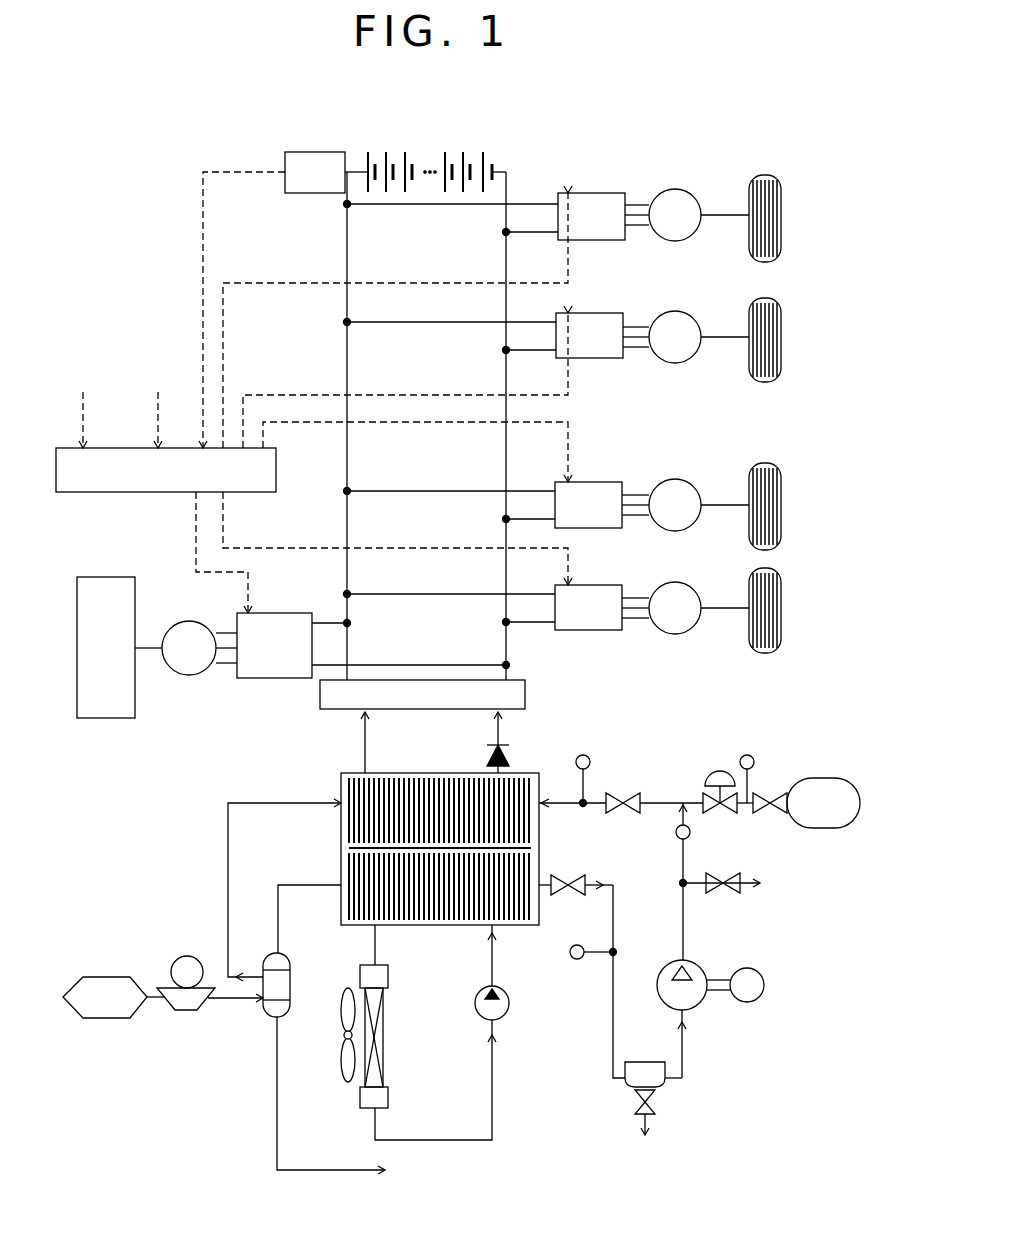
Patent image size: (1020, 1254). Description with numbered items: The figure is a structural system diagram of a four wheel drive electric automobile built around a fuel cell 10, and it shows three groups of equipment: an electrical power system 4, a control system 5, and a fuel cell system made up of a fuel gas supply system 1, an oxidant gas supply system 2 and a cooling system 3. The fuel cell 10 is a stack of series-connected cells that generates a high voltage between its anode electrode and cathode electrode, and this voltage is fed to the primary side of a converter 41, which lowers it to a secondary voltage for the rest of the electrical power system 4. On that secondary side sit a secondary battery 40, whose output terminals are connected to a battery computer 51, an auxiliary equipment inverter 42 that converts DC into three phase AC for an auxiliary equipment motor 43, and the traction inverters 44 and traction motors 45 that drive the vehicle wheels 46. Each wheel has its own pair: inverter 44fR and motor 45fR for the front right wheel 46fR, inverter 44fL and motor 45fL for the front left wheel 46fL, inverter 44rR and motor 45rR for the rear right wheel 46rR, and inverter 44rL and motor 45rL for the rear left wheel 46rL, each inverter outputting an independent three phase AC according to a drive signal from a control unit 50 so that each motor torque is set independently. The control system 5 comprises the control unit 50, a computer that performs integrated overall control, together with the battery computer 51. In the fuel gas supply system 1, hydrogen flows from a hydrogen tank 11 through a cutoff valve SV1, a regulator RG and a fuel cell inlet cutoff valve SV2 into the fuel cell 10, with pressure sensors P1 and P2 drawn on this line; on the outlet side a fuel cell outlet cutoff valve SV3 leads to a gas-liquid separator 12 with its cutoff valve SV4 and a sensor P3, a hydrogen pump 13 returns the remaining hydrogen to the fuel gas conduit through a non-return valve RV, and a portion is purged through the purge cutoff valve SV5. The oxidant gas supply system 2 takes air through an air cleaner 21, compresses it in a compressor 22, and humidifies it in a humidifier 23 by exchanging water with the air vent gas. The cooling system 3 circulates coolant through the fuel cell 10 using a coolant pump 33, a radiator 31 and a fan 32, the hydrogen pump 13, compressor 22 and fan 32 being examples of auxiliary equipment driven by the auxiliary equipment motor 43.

The fuel gas supply system 1 is at (663, 936).
The oxidant gas supply system 2 is at (257, 904).
The cooling system 3 is at (440, 1037).
The electrical power system 4 is at (444, 258).
The control system 5 is at (260, 526).
The fuel cell 10 is at (541, 866).
The hydrogen tank 11 is at (818, 778).
The gas-liquid separator 12 is at (632, 1062).
The hydrogen pump 13 is at (700, 1005).
The air cleaner 21 is at (97, 977).
The compressor 22 is at (193, 1011).
The humidifier 23 is at (292, 962).
The radiator 31 is at (388, 972).
The fan 32 is at (340, 1036).
The coolant pump 33 is at (509, 1003).
The secondary battery 40 is at (452, 162).
The converter 41 is at (525, 697).
The auxiliary equipment inverter 42 is at (274, 613).
The auxiliary equipment motor 43 is at (190, 675).
The traction inverters 44 is at (600, 166).
The traction motors 45 is at (684, 166).
The vehicle wheels 46 is at (772, 166).
The traction inverter 44fR is at (607, 240).
The traction motor 45fR is at (678, 242).
The front vehicle wheel on the right side 46fR is at (782, 200).
The traction inverter 44fL is at (607, 358).
The traction motor 45fL is at (678, 364).
The front vehicle wheel on the left side 46fL is at (782, 322).
The traction inverter 44rR is at (597, 482).
The traction motor 45rR is at (680, 480).
The rear vehicle wheel on the right side 46rR is at (780, 490).
The traction inverter 44rL is at (597, 585).
The traction motor 45rL is at (680, 583).
The rear vehicle wheel on the left side 46rL is at (780, 593).
The control unit 50 is at (276, 470).
The battery computer 51 is at (318, 152).
The cutoff valve SV1 is at (770, 793).
The fuel cell inlet cutoff valve SV2 is at (625, 793).
The fuel cell outlet cutoff valve SV3 is at (575, 876).
The cutoff valve SV4 is at (655, 1102).
The purge cutoff valve SV5 is at (725, 893).
The pressure sensor P1 is at (747, 763).
The pressure sensor P2 is at (587, 765).
The pressure sensor P3 is at (575, 955).
The regulator RG is at (716, 772).
The non-return valve RV is at (690, 834).